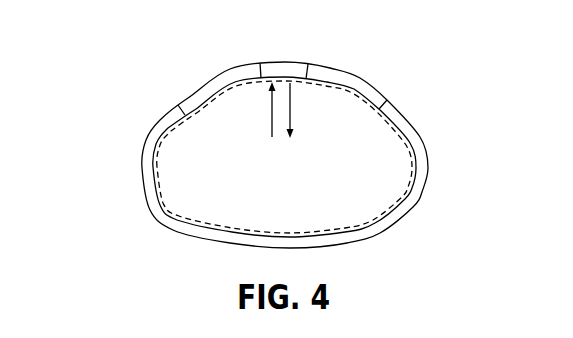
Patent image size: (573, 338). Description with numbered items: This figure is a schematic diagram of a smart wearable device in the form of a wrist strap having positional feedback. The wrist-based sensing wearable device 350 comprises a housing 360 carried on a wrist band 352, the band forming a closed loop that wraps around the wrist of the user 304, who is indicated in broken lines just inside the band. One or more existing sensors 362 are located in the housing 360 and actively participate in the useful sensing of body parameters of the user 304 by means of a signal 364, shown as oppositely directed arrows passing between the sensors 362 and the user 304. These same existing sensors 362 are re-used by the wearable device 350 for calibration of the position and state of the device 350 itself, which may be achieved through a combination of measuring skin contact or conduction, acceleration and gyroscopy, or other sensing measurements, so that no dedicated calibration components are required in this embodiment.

The wrist-based sensing wearable device 350 is at (274, 150).
The wrist band 352 is at (428, 168).
The housing 360 is at (355, 75).
The existing sensors 362 is at (293, 63).
The signal 364 is at (270, 118).
The user 304 is at (347, 208).